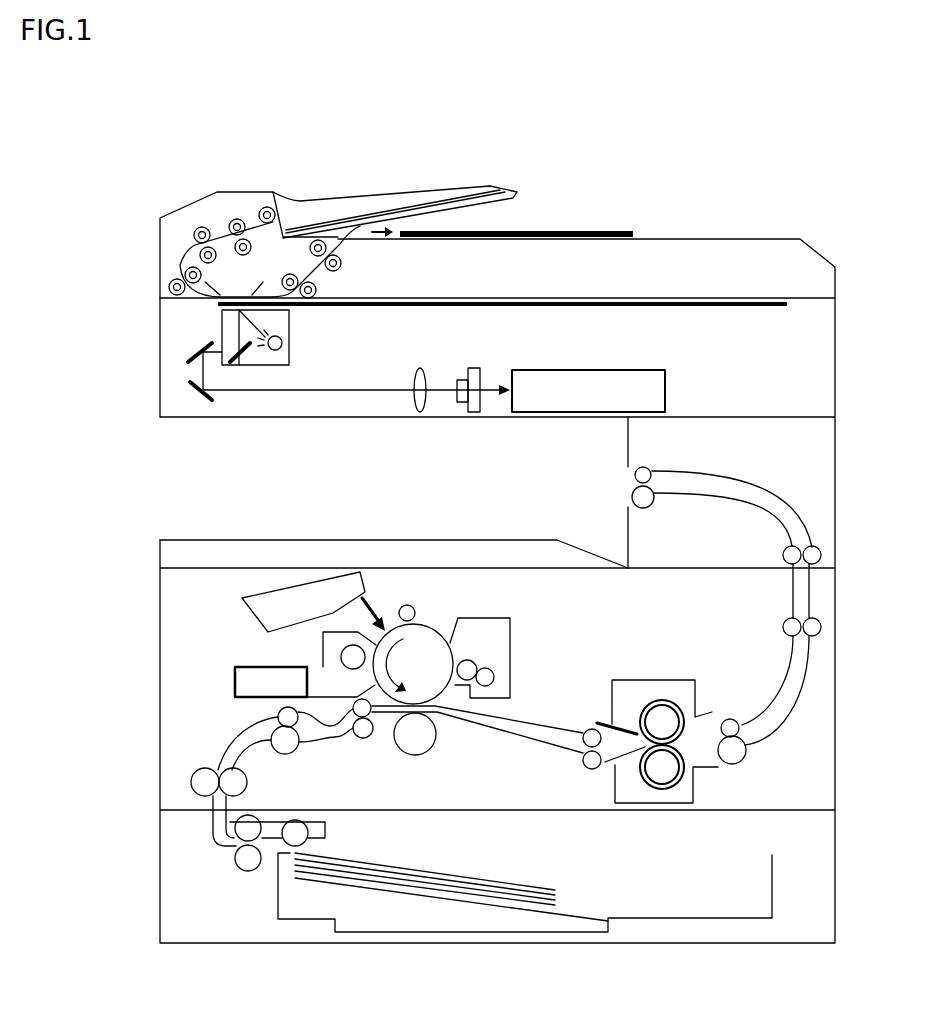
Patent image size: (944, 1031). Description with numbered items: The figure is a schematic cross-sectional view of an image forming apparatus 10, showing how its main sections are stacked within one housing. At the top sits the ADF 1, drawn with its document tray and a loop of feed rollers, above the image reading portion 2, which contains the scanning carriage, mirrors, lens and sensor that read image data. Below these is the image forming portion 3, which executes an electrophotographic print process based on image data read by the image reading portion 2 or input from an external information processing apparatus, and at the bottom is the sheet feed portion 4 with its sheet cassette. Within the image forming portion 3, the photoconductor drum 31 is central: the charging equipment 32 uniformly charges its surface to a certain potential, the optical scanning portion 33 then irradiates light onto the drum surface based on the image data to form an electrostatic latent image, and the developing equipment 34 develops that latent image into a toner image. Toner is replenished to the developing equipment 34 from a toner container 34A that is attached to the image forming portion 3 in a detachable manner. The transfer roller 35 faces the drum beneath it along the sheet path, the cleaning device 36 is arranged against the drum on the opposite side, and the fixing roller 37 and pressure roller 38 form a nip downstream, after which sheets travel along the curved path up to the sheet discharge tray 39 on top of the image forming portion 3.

The image forming apparatus 10 is at (146, 154).
The ADF 1 is at (160, 243).
The image reading portion 2 is at (160, 372).
The image forming portion 3 is at (183, 593).
The sheet feed portion 4 is at (160, 882).
The photoconductor drum 31 is at (443, 628).
The charging equipment 32 is at (398, 606).
The optical scanning portion 33 is at (245, 617).
The developing equipment 34 is at (323, 645).
The toner container 34A is at (235, 692).
The transfer roller 35 is at (415, 757).
The cleaning device 36 is at (488, 618).
The fixing roller 37 is at (665, 700).
The pressure roller 38 is at (664, 790).
The sheet discharge tray 39 is at (520, 540).